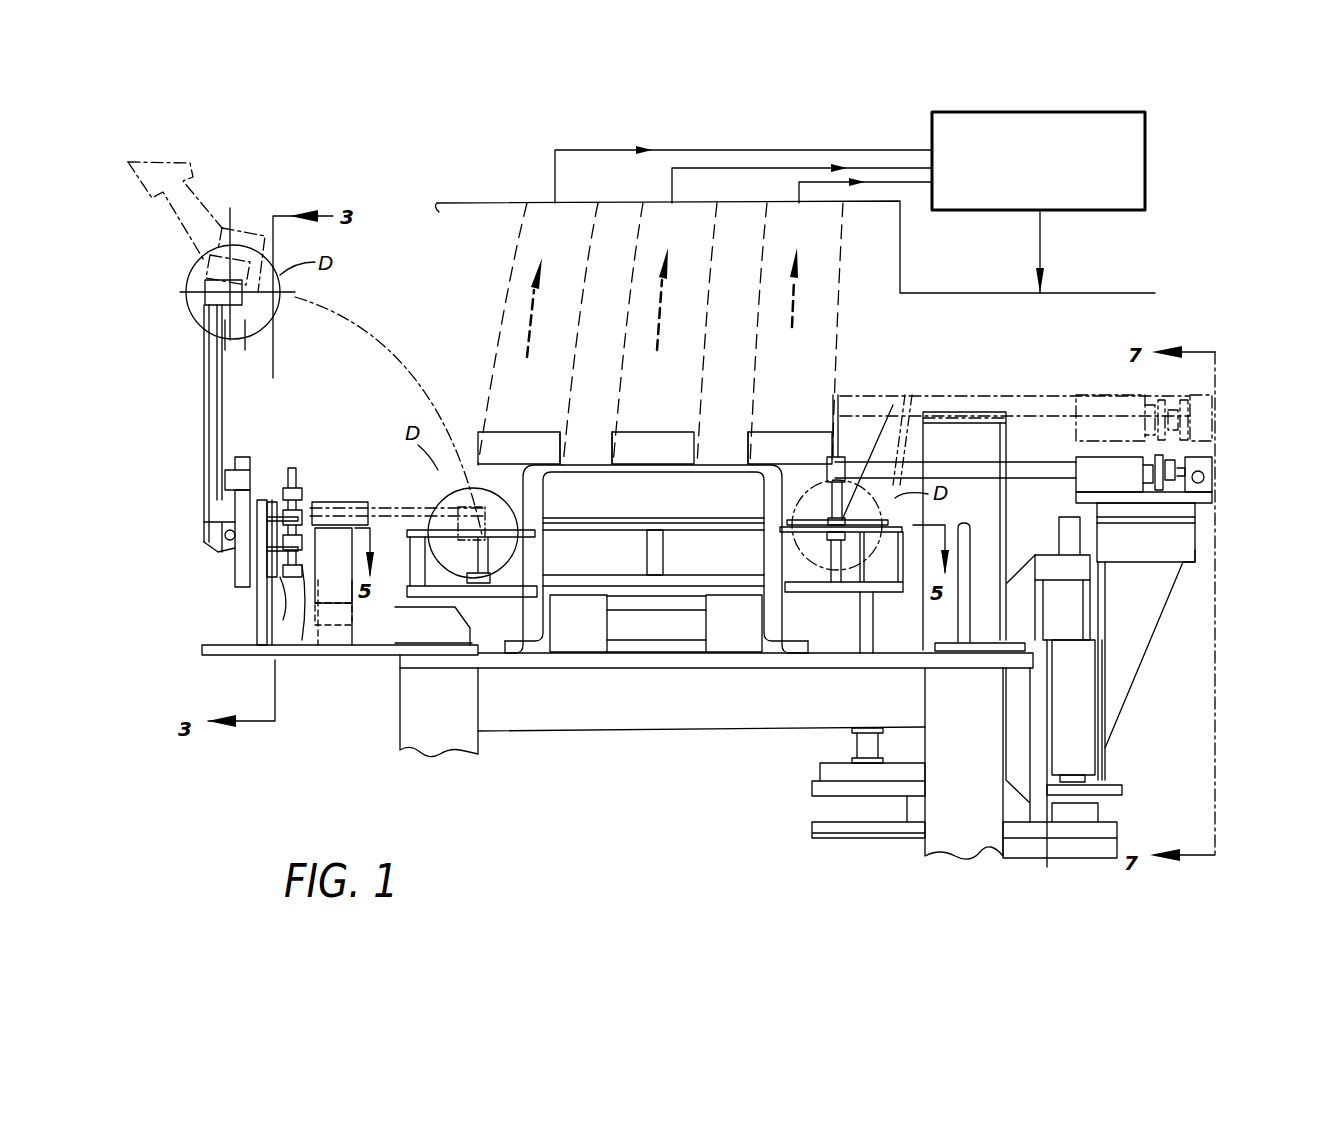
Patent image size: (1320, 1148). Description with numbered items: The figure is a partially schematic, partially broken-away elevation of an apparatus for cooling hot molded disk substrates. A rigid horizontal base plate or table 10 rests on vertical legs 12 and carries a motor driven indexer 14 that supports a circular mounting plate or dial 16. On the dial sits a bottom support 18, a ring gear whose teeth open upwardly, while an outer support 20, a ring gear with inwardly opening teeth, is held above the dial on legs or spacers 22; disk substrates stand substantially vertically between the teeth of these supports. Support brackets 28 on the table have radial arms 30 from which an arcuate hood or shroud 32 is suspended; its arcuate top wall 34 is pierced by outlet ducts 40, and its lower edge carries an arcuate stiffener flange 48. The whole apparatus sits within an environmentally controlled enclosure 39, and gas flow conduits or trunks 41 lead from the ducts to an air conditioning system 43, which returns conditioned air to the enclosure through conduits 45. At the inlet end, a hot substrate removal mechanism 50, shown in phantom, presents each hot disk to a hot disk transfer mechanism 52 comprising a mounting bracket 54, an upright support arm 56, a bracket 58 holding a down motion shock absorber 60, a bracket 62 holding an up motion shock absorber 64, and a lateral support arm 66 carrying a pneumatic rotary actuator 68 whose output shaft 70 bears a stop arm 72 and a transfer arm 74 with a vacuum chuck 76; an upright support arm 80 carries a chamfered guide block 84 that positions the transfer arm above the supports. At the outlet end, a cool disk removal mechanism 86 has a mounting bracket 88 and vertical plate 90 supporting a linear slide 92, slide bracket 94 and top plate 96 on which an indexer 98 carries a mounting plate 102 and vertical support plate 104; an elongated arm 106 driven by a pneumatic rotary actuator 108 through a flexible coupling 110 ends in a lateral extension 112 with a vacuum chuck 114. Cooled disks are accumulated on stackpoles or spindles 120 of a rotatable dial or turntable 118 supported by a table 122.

The base plate or table 10 is at (745, 665).
The vertical legs 12 is at (470, 742).
The motor driven indexer 14 is at (708, 612).
The circular mounting plate or dial 16 is at (480, 576).
The bottom support 18 is at (560, 597).
The outer support 20 is at (400, 540).
The legs or spacers 22 is at (665, 555).
The support brackets 28 is at (538, 495).
The radial arms 30 is at (582, 462).
The arcuate hood or shroud 32 is at (653, 506).
The arcuate top wall 34 is at (606, 462).
The environmentally controlled enclosure 39 is at (455, 206).
The outlet ducts 40 is at (512, 432).
The gas flow conduits or trunks 41 is at (750, 168).
The air conditioning system 43 is at (1145, 136).
The conduits 45 is at (1041, 238).
The arcuate stiffener flange 48 is at (608, 512).
The hot substrate removal mechanism 50 is at (205, 215).
The hot disk transfer mechanism 52 is at (320, 445).
The mounting bracket 54 is at (345, 620).
The upright support arm 56 is at (257, 608).
The bracket 58 is at (275, 595).
The down motion shock absorber 60 is at (318, 612).
The bracket 62 is at (280, 500).
The up motion shock absorber 64 is at (298, 480).
The lateral support arm 66 is at (225, 556).
The pneumatic rotary actuator 68 is at (225, 502).
The output shaft 70 is at (222, 537).
The stop arm 72 is at (323, 512).
The transfer arm 74 is at (210, 432).
The vacuum chuck 76 is at (210, 297).
The upright support arm 80 is at (345, 600).
The chamfered guide block 84 is at (372, 505).
The cool disk removal mechanism 86 is at (1078, 385).
The mounting bracket 88 is at (1000, 680).
The vertical plate 90 is at (1038, 556).
The linear slide 92 is at (1054, 753).
The slide bracket 94 is at (1128, 655).
The top plate 96 is at (1185, 562).
The indexer 98 is at (1178, 540).
The mounting plate 102 is at (1212, 495).
The vertical support plate 104 is at (1109, 474).
The elongated arm 106 is at (1005, 462).
The pneumatic rotary actuator 108 is at (1205, 465).
The flexible coupling 110 is at (1195, 450).
The lateral extension 112 is at (855, 456).
The vacuum chuck 114 is at (888, 440).
The rotatable dial or turntable 118 is at (820, 772).
The stackpoles or spindles 120 is at (862, 595).
The table 122 is at (815, 830).